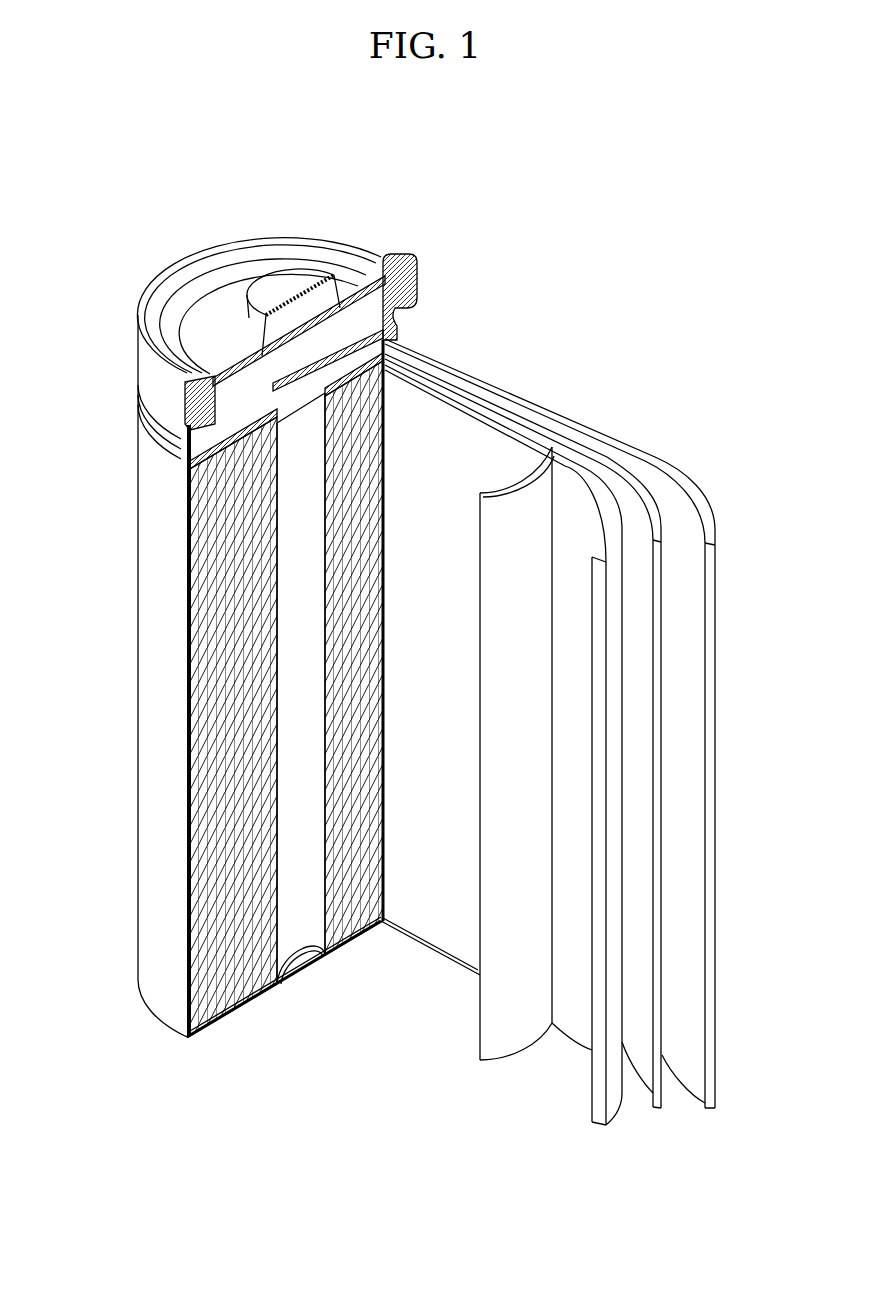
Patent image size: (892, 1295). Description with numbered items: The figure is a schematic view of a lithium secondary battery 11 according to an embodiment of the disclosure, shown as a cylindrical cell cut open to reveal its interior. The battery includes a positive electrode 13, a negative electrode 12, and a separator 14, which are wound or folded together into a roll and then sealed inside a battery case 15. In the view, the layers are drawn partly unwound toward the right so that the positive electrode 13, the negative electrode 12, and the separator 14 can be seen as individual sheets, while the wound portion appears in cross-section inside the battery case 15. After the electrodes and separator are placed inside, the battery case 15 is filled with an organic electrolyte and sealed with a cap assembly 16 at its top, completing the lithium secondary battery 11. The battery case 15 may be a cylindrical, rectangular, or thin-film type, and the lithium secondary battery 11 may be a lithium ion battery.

The lithium secondary battery 11 is at (538, 288).
The negative electrode 12 is at (700, 520).
The positive electrode 13 is at (581, 468).
The separator 14 is at (512, 488).
The battery case 15 is at (152, 688).
The cap assembly 16 is at (272, 282).